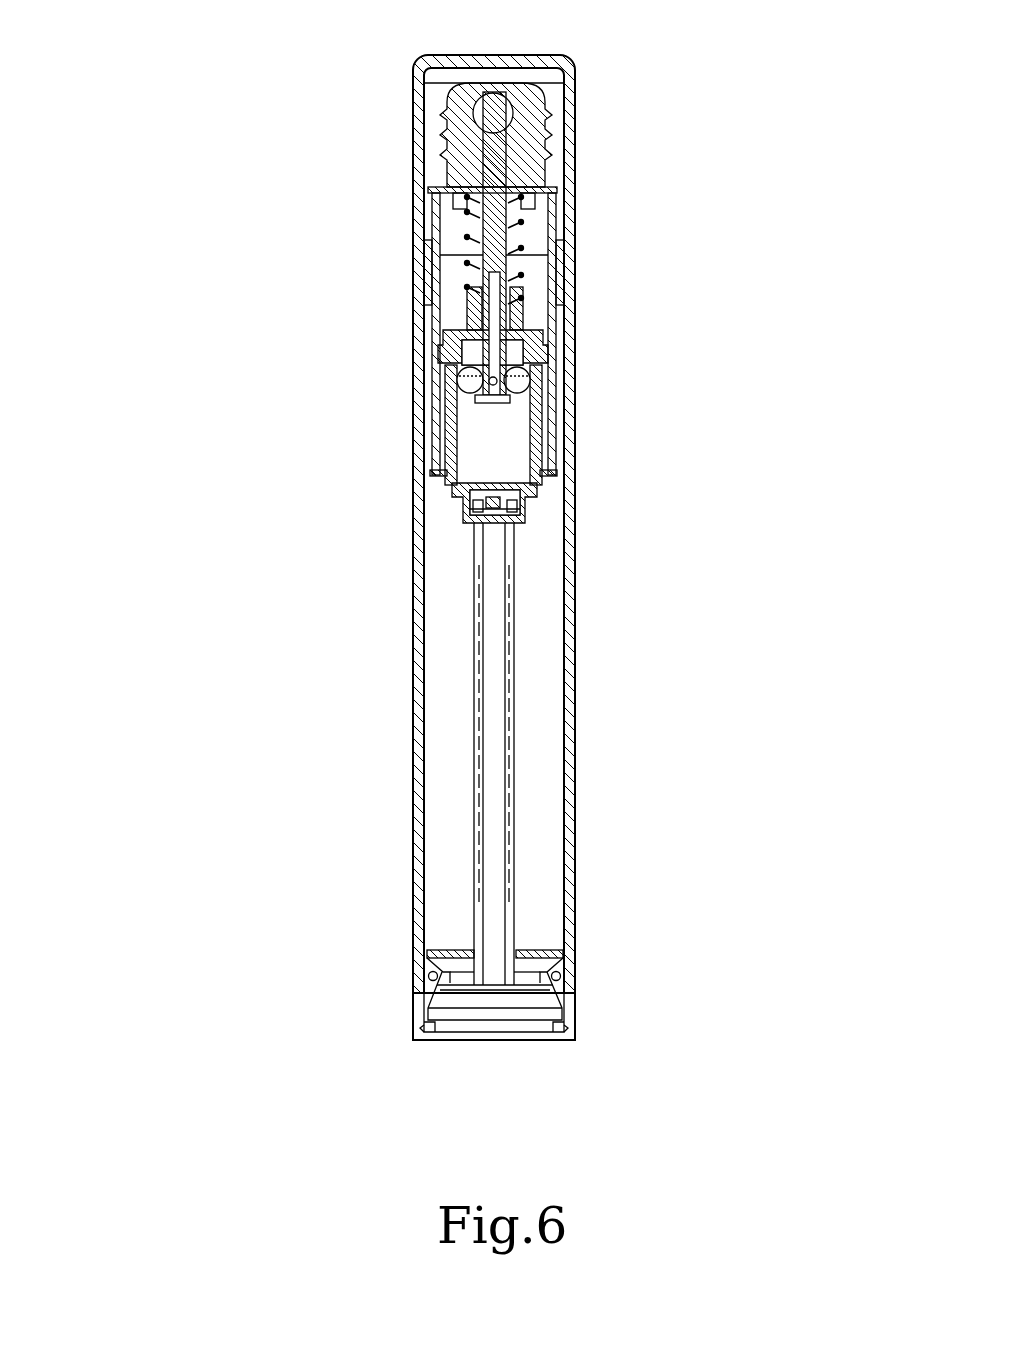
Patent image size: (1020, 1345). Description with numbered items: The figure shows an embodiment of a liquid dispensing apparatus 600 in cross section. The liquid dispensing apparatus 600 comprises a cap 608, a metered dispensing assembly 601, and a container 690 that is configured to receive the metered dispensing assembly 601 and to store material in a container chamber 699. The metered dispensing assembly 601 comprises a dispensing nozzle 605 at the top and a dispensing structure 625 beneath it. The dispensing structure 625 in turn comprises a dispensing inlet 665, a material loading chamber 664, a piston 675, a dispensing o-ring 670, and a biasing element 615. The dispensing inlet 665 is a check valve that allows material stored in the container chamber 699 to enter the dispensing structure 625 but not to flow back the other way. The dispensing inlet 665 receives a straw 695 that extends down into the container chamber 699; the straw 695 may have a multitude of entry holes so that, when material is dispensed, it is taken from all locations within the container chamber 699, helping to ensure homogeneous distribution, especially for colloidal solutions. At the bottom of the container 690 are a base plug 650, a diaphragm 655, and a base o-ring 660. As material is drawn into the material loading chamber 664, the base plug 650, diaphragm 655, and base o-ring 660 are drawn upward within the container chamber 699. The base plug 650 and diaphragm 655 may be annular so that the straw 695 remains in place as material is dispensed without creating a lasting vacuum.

The liquid dispensing apparatus 600 is at (367, 55).
The metered dispensing assembly 601 is at (258, 228).
The dispensing nozzle 605 is at (457, 135).
The cap 608 is at (574, 170).
The biasing element 615 is at (468, 235).
The dispensing structure 625 is at (388, 417).
The base plug 650 is at (520, 1030).
The diaphragm 655 is at (530, 995).
The base o-ring 660 is at (433, 976).
The material loading chamber 664 is at (471, 430).
The dispensing inlet 665 is at (497, 502).
The dispensing o-ring 670 is at (518, 380).
The piston 675 is at (493, 270).
The container 690 is at (386, 650).
The straw 695 is at (497, 765).
The container chamber 699 is at (543, 553).